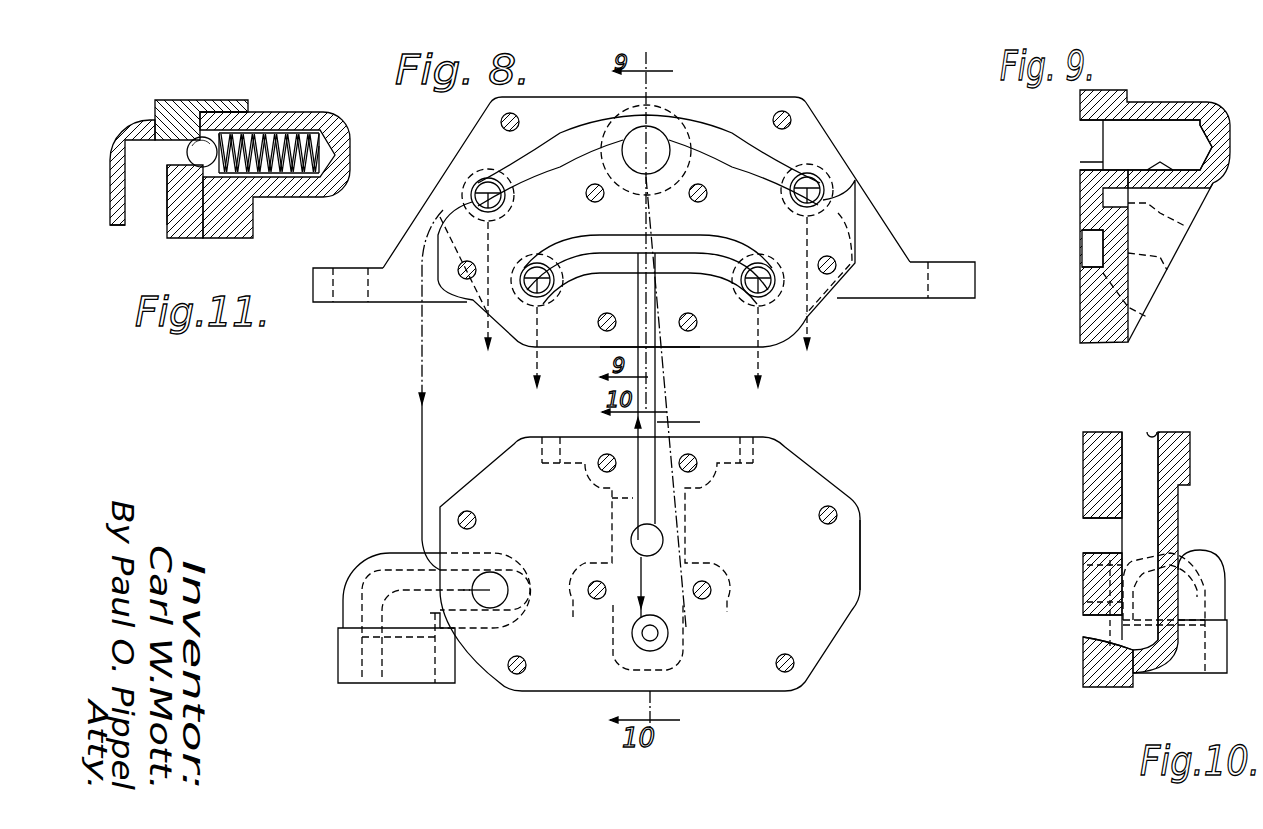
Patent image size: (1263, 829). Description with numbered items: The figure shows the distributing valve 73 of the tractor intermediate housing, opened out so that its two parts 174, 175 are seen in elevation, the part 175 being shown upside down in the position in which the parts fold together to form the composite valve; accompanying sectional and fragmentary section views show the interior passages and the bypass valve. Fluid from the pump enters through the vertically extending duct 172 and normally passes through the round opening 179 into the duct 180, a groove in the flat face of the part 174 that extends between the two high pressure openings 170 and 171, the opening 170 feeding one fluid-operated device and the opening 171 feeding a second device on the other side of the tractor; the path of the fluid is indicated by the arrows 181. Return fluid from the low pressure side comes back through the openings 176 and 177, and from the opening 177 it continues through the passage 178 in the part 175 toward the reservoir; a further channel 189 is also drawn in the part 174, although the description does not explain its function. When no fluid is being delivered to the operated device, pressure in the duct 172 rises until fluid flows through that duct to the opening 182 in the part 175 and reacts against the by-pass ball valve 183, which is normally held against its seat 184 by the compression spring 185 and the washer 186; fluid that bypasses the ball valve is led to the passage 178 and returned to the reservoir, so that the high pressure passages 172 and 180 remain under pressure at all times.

In FIG. 8, the distributing valve 73 is at (732, 96).
In FIG. 8, the high pressure opening 170 is at (763, 292).
In FIG. 8, the high pressure opening 171 is at (527, 292).
In FIG. 8, the duct 172 is at (632, 505).
In FIG. 11, the duct 172 is at (130, 212).
In FIG. 10, the duct 172 is at (1167, 412).
In FIG. 8, the distributing valve part 174 is at (825, 131).
In FIG. 11, the distributing valve part 174 is at (283, 198).
In FIG. 9, the distributing valve part 174 is at (1190, 81).
In FIG. 8, the distributing valve part 175 is at (860, 557).
In FIG. 11, the distributing valve part 175 is at (190, 238).
In FIG. 10, the distributing valve part 175 is at (1192, 462).
In FIG. 8, the opening 176 is at (813, 188).
In FIG. 8, the opening 177 is at (471, 193).
In FIG. 8, the passage 178 is at (387, 567).
In FIG. 10, the passage 178 is at (1220, 545).
In FIG. 8, the round opening 179 is at (630, 543).
In FIG. 10, the round opening 179 is at (1090, 530).
In FIG. 8, the duct 180 is at (688, 244).
In FIG. 9, the duct 180 is at (1083, 245).
In FIG. 8, the arrows 181 is at (612, 349).
In FIG. 8, the opening 182 is at (660, 638).
In FIG. 11, the opening 182 is at (155, 120).
In FIG. 10, the opening 182 is at (1103, 625).
In FIG. 11, the by-pass ball valve 183 is at (213, 138).
In FIG. 11, the seat 184 is at (176, 136).
In FIG. 11, the compression spring 185 is at (320, 100).
In FIG. 11, the washer 186 is at (238, 107).
In FIG. 8, the channel 189 is at (560, 140).
In FIG. 9, the channel 189 is at (1123, 170).